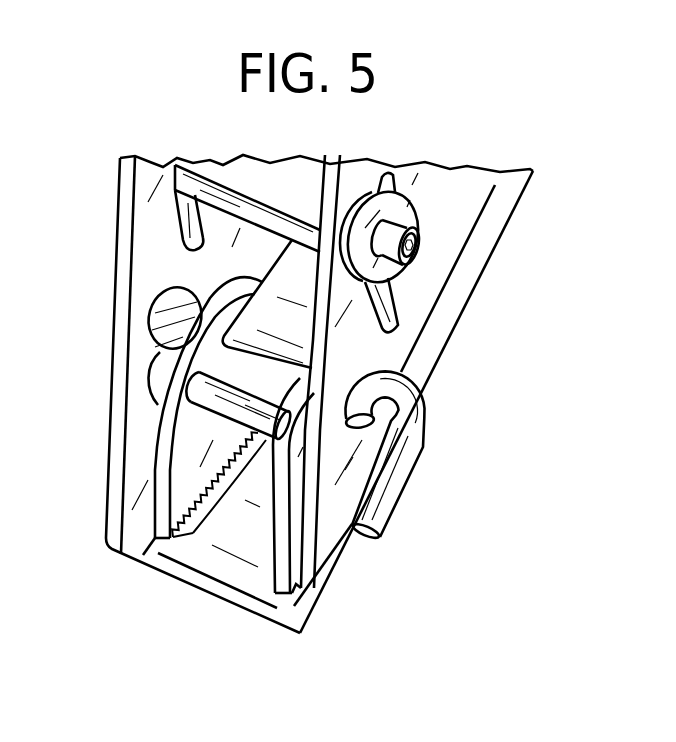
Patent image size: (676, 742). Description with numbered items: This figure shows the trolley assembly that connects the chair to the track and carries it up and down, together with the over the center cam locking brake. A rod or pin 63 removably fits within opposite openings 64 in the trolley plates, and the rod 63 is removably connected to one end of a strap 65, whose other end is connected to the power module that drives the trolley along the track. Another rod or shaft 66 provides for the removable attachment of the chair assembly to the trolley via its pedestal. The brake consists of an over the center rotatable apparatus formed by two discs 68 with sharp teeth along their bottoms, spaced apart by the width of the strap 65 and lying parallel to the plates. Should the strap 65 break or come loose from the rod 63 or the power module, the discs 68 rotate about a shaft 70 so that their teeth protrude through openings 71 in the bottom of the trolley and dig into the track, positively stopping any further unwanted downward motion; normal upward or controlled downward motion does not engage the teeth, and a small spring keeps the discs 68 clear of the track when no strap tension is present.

The rod or pin 63 is at (405, 488).
The openings 64 is at (149, 330).
The strap 65 is at (288, 276).
The rod or shaft 66 is at (410, 226).
The over the center rotatable apparatus (discs) 68 is at (165, 450).
The shaft 70 is at (208, 412).
The openings 71 is at (172, 575).